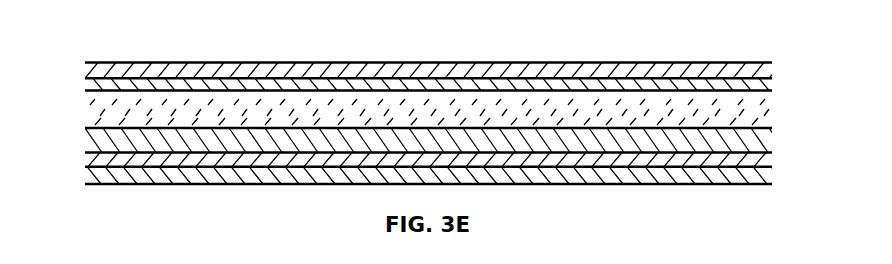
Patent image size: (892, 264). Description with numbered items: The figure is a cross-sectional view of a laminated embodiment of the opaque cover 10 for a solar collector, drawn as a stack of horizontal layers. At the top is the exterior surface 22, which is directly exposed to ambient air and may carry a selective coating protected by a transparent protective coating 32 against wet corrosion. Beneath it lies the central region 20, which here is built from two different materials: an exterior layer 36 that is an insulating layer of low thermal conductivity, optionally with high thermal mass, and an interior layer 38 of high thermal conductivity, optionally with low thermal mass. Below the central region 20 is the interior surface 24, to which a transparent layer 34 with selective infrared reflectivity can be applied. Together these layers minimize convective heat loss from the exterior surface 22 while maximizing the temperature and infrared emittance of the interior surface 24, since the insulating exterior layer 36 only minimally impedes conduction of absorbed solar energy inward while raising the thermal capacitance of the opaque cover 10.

The opaque cover 10 is at (787, 63).
The central region 20 is at (40, 90).
The exterior surface 22 is at (86, 88).
The interior surface 24 is at (85, 160).
The transparent protective coating 32 is at (86, 73).
The transparent layer 34 is at (84, 175).
The exterior layer 36 is at (87, 106).
The interior layer 38 is at (85, 140).